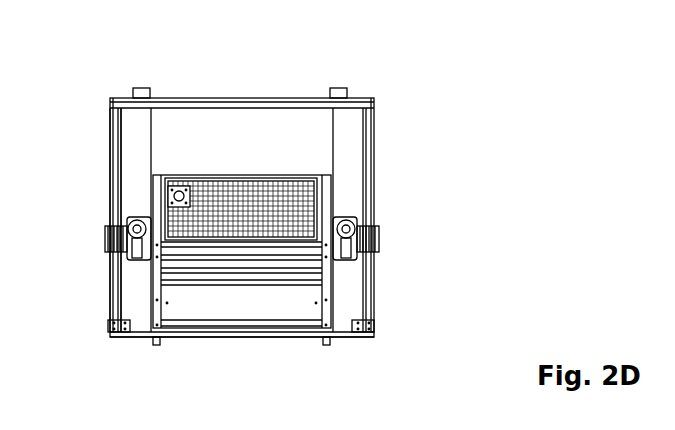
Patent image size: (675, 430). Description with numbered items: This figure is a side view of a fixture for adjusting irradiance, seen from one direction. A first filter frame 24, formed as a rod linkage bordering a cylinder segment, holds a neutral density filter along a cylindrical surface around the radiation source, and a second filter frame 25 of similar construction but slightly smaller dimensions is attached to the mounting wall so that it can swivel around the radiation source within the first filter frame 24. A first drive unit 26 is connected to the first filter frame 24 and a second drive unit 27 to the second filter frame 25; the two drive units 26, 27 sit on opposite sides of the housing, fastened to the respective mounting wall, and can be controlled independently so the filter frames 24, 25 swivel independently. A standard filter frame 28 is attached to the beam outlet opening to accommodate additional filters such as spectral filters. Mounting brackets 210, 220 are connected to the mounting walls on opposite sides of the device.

The first filter frame 24 is at (110, 128).
The second filter frame 25 is at (120, 180).
The first drive unit 26 is at (108, 224).
The second drive unit 27 is at (380, 236).
The standard filter frame 28 is at (250, 334).
The mounting bracket 210 is at (142, 88).
The mounting bracket 220 is at (333, 88).